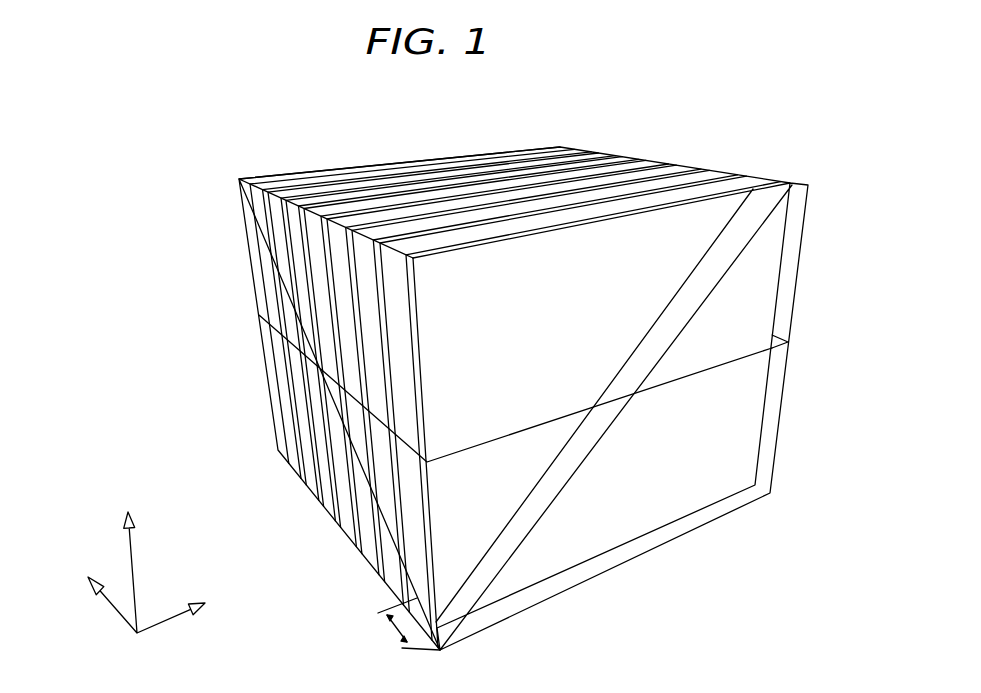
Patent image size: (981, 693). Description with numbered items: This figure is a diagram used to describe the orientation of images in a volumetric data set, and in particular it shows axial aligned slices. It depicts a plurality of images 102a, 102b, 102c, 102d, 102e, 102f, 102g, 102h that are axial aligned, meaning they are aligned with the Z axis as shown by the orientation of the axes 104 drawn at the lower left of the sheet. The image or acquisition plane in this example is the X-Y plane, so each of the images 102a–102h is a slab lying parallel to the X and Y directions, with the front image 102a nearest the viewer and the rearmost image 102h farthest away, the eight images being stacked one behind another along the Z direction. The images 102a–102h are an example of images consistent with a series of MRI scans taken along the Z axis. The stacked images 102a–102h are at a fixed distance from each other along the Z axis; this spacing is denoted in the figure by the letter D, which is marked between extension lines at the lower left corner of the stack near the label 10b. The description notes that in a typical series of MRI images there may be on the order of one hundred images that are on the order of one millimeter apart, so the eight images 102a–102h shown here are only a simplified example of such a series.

The image 102a is at (789, 183).
The image 102b is at (748, 174).
The image 102c is at (528, 375).
The image 102d is at (498, 359).
The image 102e is at (472, 343).
The image 102f is at (451, 331).
The image 102g is at (431, 318).
The image 102h is at (561, 148).
The inter-slice spacing 10b is at (378, 613).
The axes 104 is at (133, 638).